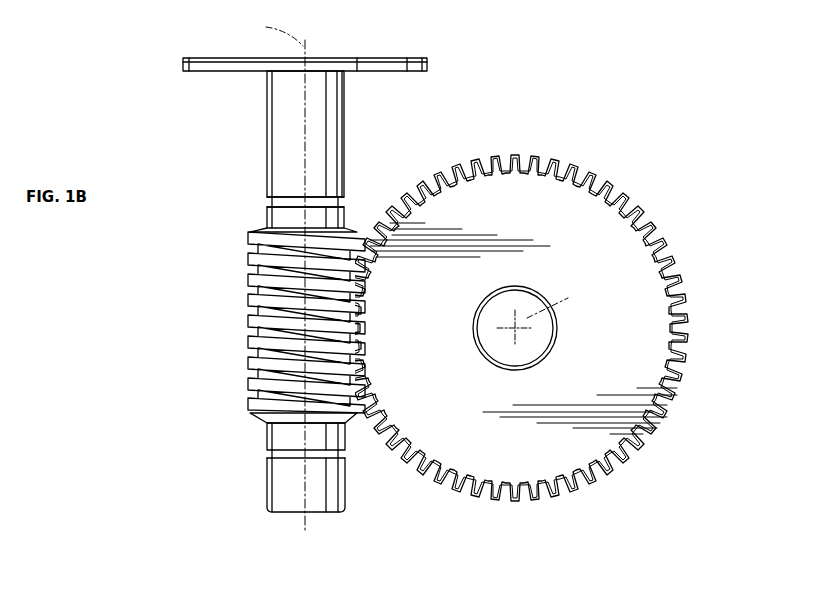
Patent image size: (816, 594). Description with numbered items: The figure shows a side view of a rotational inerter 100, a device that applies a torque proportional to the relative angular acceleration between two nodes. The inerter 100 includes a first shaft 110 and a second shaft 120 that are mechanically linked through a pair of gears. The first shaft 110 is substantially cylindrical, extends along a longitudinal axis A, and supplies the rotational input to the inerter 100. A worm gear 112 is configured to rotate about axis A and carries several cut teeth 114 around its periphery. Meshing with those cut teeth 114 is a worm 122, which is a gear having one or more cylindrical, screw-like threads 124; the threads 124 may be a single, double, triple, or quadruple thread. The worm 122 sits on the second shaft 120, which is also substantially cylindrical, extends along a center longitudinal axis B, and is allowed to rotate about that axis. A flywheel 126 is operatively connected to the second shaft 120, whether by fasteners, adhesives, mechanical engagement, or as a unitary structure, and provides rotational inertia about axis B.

The inerter 100 is at (566, 79).
The first shaft 110 is at (557, 333).
The worm gear 112 is at (597, 245).
The cut teeth 114 is at (577, 172).
The second shaft 120 is at (277, 137).
The worm 122 is at (248, 260).
The threads 124 is at (248, 380).
The flywheel 126 is at (207, 63).